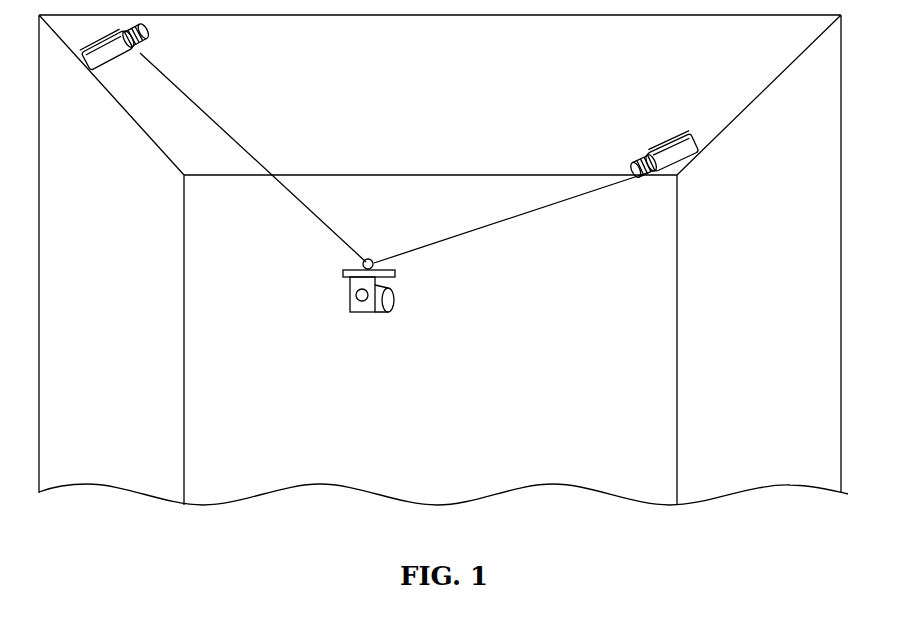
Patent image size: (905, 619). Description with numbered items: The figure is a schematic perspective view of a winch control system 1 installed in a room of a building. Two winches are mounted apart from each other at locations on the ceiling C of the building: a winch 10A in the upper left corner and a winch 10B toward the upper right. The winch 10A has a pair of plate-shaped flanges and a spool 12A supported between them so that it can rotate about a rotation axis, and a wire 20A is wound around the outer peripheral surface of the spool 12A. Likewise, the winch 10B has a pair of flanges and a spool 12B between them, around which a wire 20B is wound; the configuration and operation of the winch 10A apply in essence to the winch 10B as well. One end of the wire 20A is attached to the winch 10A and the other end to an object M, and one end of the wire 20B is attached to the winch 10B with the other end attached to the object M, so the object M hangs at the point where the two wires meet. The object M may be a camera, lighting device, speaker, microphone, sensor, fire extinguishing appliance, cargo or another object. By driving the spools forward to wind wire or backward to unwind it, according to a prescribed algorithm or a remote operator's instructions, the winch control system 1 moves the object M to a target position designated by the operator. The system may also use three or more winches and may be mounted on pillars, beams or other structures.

The winch control system 1 is at (283, 348).
The winch 10A is at (102, 86).
The winch 10B is at (686, 174).
The spool 12A is at (132, 68).
The spool 12B is at (650, 186).
The wire 20A is at (293, 198).
The wire 20B is at (503, 226).
The ceiling C is at (732, 63).
The object M is at (372, 315).